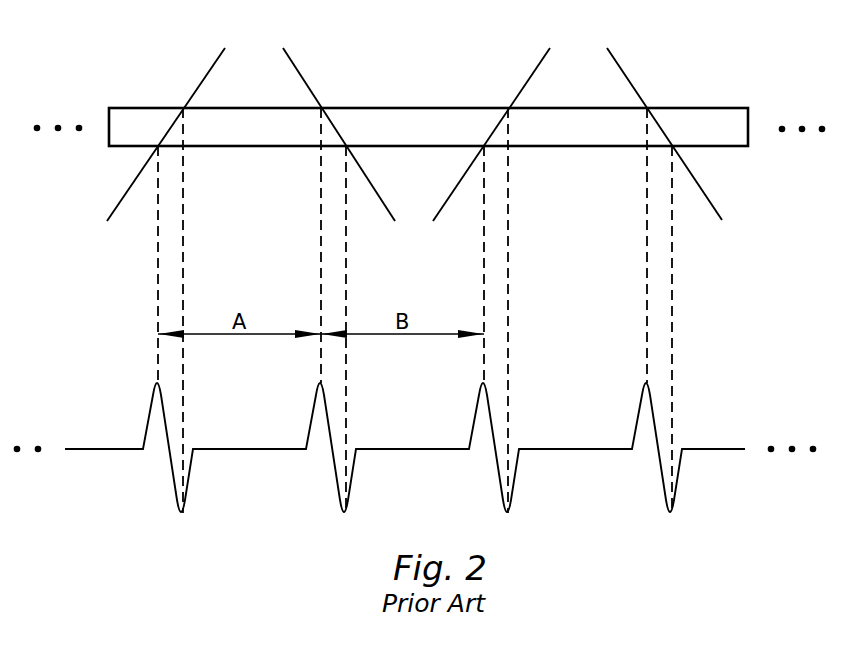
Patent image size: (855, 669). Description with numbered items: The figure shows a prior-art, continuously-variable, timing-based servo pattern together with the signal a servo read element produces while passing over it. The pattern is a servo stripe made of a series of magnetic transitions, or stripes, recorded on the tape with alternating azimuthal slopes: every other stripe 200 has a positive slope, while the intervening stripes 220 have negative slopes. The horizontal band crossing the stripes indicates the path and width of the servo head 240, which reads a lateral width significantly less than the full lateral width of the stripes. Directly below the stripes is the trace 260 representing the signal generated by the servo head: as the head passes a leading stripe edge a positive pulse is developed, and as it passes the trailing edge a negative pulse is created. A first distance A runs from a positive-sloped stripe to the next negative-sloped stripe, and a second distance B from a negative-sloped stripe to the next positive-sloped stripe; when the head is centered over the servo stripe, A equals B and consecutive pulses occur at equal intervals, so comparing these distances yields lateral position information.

The magnetic transition stripe with positive slope 200 is at (210, 67).
The magnetic transition stripe with negative slope 220 is at (297, 70).
The servo head path and width 240 is at (692, 108).
The trace 260 is at (122, 480).